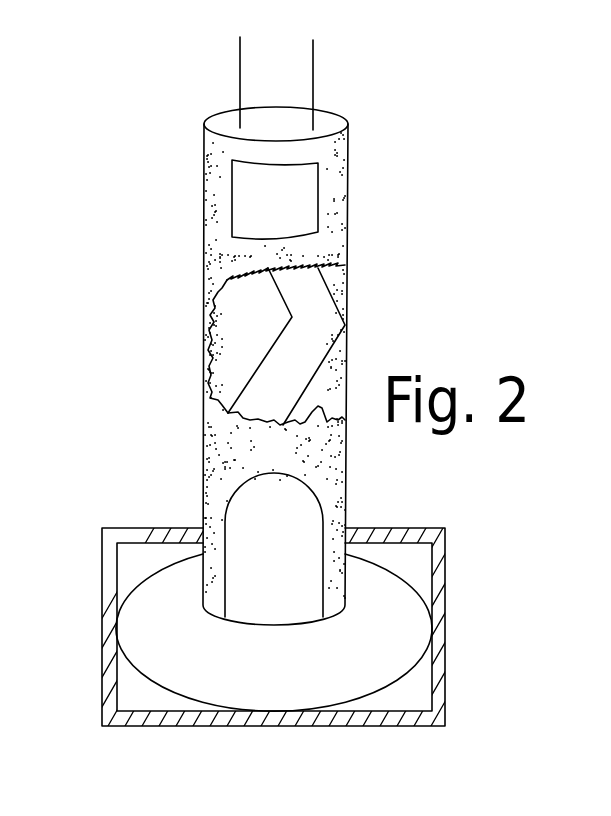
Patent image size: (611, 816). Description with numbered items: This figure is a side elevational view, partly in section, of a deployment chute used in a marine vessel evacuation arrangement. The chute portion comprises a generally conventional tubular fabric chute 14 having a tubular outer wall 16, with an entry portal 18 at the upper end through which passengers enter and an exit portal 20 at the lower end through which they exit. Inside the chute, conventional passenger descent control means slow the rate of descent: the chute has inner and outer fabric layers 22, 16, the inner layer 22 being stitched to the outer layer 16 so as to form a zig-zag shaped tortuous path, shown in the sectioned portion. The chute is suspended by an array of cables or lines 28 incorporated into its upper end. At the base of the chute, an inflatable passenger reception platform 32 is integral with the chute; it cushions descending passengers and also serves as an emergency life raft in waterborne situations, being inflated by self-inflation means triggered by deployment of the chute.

The tubular fabric chute 14 is at (327, 242).
The tubular outer wall 16 is at (284, 463).
The entry portal 18 is at (305, 193).
The exit portal 20 is at (300, 542).
The inner fabric layer 22 is at (305, 369).
The cables or lines 28 is at (313, 73).
The inflatable passenger reception platform 32 is at (388, 651).